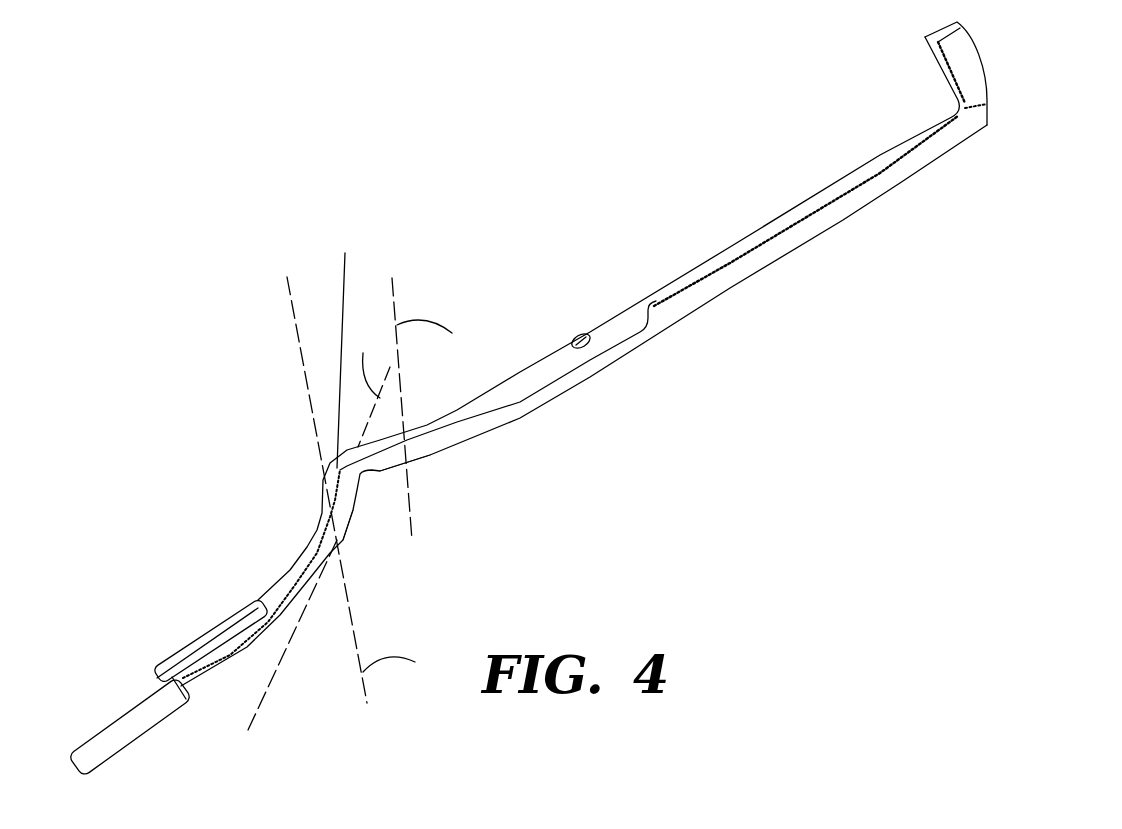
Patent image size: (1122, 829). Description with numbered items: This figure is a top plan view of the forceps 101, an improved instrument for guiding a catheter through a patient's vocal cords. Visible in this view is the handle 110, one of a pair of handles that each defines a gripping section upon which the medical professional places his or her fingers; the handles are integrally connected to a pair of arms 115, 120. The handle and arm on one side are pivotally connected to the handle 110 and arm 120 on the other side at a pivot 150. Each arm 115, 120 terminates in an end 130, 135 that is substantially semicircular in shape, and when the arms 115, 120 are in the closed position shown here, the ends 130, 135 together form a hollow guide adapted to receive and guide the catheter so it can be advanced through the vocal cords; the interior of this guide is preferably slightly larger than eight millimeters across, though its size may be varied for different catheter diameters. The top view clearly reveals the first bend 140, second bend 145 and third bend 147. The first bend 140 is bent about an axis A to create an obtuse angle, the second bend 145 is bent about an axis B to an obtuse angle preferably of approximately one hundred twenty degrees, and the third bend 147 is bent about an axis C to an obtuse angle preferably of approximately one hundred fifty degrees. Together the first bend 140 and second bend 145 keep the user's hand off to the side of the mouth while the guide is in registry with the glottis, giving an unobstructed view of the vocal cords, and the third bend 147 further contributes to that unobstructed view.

The forceps 101 is at (433, 290).
The handle 110 is at (113, 753).
The arm 115 is at (756, 260).
The arm 120 is at (787, 216).
The end 130 is at (973, 78).
The end 135 is at (945, 78).
The first bend 140 is at (348, 543).
The second bend 145 is at (349, 349).
The third bend 147 is at (418, 458).
The pivot 150 is at (578, 333).